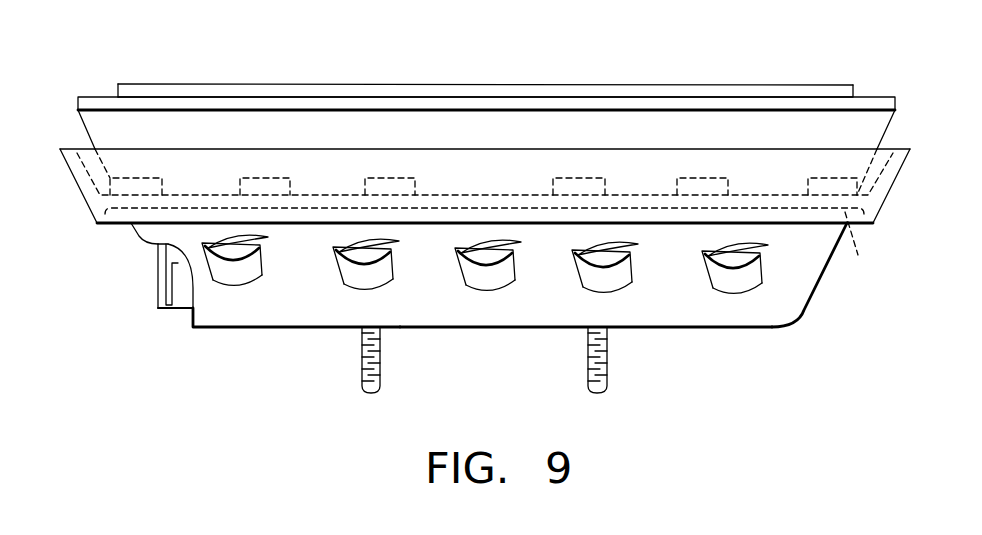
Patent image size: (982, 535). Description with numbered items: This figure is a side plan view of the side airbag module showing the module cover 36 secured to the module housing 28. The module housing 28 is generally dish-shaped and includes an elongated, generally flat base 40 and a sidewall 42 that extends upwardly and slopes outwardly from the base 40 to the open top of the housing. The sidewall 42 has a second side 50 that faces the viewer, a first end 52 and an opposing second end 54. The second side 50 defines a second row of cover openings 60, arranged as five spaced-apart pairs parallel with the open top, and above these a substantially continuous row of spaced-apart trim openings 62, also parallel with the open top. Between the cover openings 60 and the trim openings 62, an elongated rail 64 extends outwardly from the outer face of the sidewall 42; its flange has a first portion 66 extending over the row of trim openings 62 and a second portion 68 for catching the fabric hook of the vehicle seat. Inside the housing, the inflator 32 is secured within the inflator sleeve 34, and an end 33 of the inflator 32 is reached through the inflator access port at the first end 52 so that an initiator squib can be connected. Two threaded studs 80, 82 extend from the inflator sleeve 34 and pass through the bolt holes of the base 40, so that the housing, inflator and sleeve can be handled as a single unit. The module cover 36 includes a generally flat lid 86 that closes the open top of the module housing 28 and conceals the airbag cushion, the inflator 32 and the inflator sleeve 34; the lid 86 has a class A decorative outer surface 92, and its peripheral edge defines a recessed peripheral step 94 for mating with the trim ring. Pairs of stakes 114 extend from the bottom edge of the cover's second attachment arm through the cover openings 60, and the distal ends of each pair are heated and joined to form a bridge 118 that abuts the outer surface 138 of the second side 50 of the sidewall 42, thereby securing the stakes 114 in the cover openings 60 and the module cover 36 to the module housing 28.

The module housing 28 is at (900, 118).
The inflator 32 is at (150, 270).
The end of the inflator 33 is at (157, 292).
The inflator sleeve 34 is at (178, 310).
The module cover 36 is at (768, 78).
The base 40 is at (298, 328).
The sidewall 42 is at (893, 133).
The second side 50 is at (569, 322).
The first end 52 is at (133, 229).
The second end 54 is at (808, 303).
The second row of cover openings 60 is at (202, 244).
The trim openings 62 is at (143, 178).
The rail 64 is at (858, 246).
The first portion of the flange 66 is at (910, 150).
The second portion of the flange 68 is at (867, 225).
The threaded stud 80 is at (382, 388).
The threaded stud 82 is at (586, 385).
The lid 86 is at (150, 83).
The outer surface 92 is at (267, 87).
The peripheral step 94 is at (118, 88).
The stakes 114 is at (268, 238).
The bridge 118 is at (240, 282).
The outer surface of the second side 138 is at (503, 320).